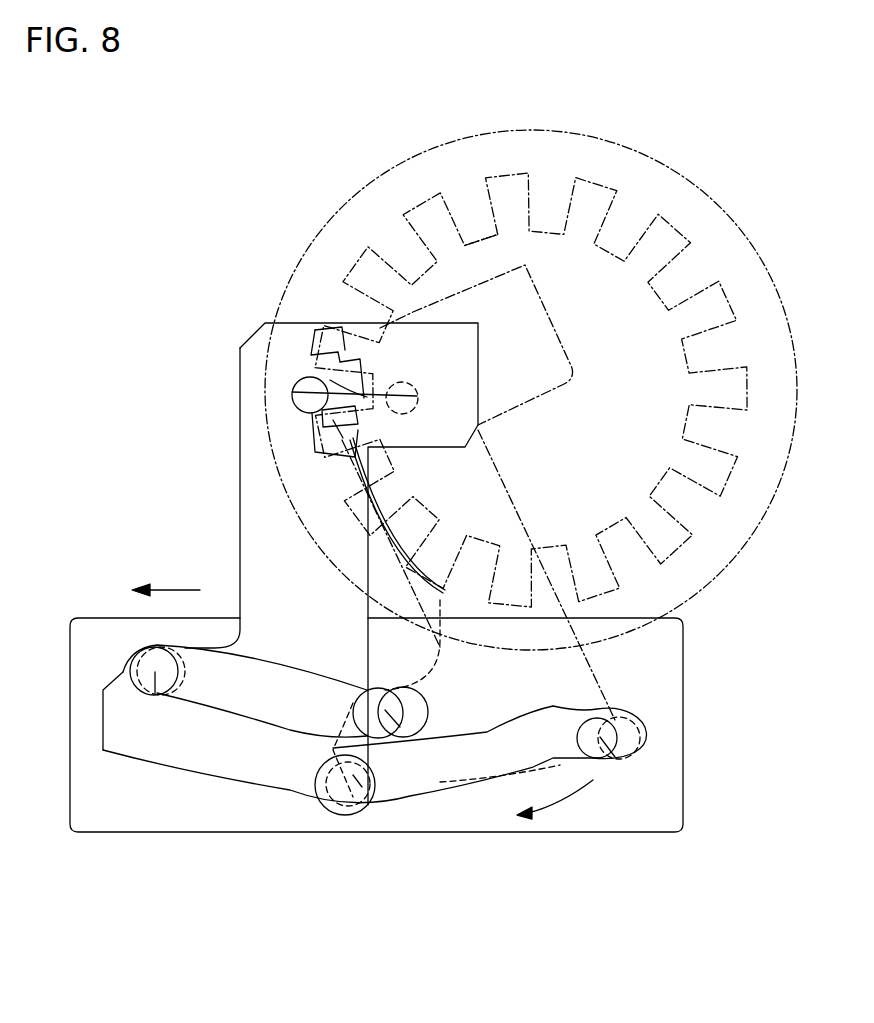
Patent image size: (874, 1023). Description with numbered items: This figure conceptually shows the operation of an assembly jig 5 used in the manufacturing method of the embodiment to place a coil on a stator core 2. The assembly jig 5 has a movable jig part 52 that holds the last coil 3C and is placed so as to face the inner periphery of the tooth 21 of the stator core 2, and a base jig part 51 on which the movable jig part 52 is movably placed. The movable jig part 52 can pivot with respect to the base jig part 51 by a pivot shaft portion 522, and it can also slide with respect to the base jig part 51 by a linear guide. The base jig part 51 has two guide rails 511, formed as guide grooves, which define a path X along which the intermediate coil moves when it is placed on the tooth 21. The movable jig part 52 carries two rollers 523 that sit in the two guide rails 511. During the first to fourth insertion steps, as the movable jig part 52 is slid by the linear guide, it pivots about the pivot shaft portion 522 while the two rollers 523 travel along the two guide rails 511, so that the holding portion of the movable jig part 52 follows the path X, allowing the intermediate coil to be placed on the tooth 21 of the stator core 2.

The stator core 2 is at (640, 176).
The tooth 21 is at (472, 228).
The path X is at (373, 398).
The assembly jig 5 is at (439, 580).
The base jig part 51 is at (665, 700).
The movable jig part 52 is at (258, 493).
The last coil 3C is at (355, 340).
The pivot shaft portion 522 is at (292, 392).
The guide rails 511 is at (252, 722).
The rollers 523 is at (155, 680).